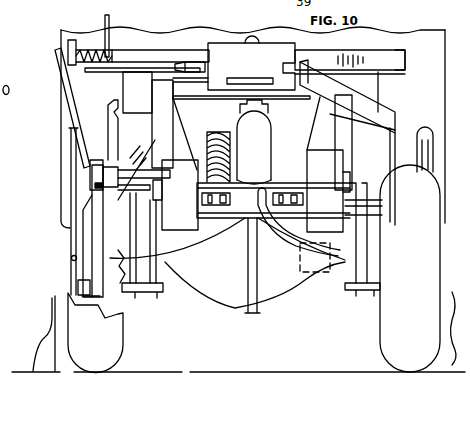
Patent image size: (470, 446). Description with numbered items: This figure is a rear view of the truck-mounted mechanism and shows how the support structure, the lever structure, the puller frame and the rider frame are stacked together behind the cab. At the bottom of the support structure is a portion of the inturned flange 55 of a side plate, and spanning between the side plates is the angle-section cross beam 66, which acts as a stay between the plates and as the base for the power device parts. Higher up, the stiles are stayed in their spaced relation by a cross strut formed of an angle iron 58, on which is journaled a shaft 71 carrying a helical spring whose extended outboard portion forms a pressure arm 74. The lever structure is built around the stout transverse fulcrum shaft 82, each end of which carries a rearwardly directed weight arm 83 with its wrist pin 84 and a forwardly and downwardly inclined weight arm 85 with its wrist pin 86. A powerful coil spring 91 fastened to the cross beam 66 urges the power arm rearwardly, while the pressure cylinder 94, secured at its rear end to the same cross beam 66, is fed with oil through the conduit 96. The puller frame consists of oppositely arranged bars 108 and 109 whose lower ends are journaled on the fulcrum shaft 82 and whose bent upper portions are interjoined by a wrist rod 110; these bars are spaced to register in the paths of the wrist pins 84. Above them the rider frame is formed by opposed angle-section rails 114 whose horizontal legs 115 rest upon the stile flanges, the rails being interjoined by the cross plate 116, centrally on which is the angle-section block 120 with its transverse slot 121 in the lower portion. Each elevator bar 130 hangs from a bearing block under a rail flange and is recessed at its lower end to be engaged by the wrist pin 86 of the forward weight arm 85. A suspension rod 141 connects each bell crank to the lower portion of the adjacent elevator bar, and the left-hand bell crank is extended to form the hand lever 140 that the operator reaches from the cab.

The pressure arm 74 is at (111, 23).
The shaft 71 is at (145, 58).
The wrist rod 110 is at (247, 70).
The transverse slot 121 is at (233, 80).
The block 120 is at (310, 53).
The angle iron 58 is at (406, 55).
The horizontal legs 115 is at (395, 105).
The bar 109 is at (399, 120).
The cross plate 116 is at (204, 98).
The coil spring 91 is at (213, 134).
The pressure cylinder 94 is at (268, 151).
The fulcrum shaft 82 is at (279, 174).
The rails 114 is at (333, 134).
The hand lever 140 is at (70, 90).
The bar 108 is at (107, 112).
The suspension rod 141 is at (75, 182).
The weight arm 83 is at (96, 158).
The wrist pin 84 is at (115, 168).
The weight arm 85 is at (102, 247).
The elevator bar 130 is at (82, 266).
The wrist pin 86 is at (72, 287).
The inturned flange portion 55 is at (185, 222).
The cross beam 66 is at (237, 210).
The conduit 96 is at (282, 233).